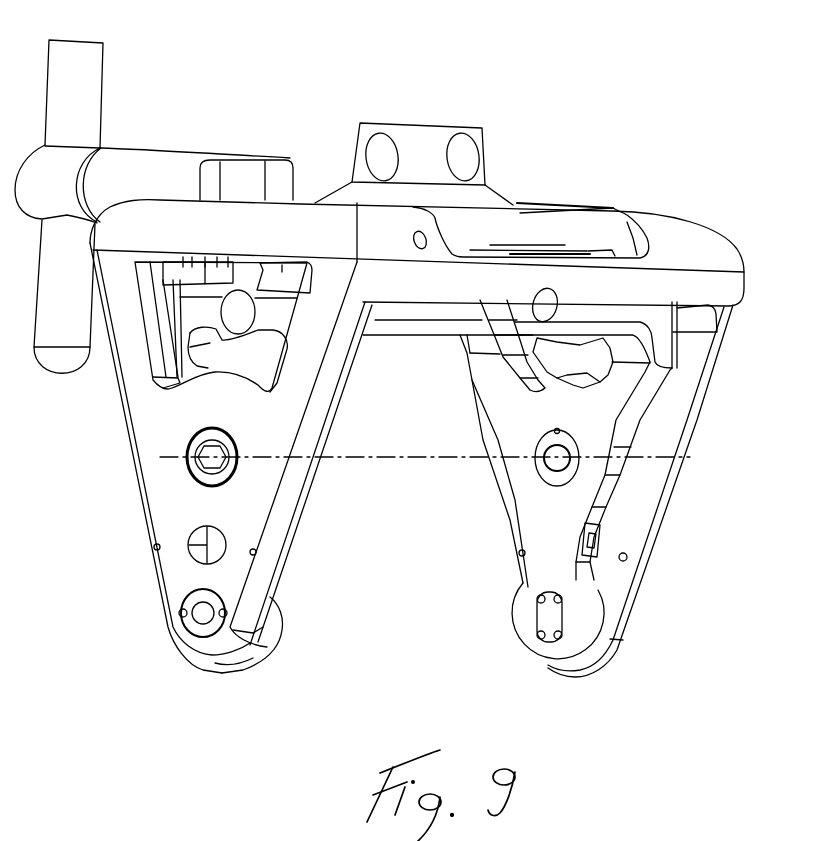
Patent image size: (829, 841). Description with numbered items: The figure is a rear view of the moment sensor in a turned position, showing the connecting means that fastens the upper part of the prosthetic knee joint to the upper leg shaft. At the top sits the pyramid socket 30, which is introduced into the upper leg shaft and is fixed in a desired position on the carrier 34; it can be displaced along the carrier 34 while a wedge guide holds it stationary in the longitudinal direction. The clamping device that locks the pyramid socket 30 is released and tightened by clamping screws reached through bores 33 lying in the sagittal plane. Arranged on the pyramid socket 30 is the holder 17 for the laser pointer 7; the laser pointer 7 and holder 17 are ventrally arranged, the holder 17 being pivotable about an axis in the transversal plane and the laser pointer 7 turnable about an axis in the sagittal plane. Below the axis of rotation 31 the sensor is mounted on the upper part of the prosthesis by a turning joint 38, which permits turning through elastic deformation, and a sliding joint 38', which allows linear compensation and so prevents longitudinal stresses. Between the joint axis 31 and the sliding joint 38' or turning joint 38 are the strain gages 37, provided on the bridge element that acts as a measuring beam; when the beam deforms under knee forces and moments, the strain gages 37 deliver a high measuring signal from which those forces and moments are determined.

The laser pointer 7 is at (95, 85).
The holder 17 is at (153, 168).
The pyramid socket 30 is at (430, 148).
The axis of rotation 31 is at (402, 458).
The bores 33 is at (413, 233).
The carrier 34 is at (699, 250).
The strain gages 37 is at (603, 532).
The turning joint 38 is at (177, 651).
The sliding joint 38' is at (507, 645).